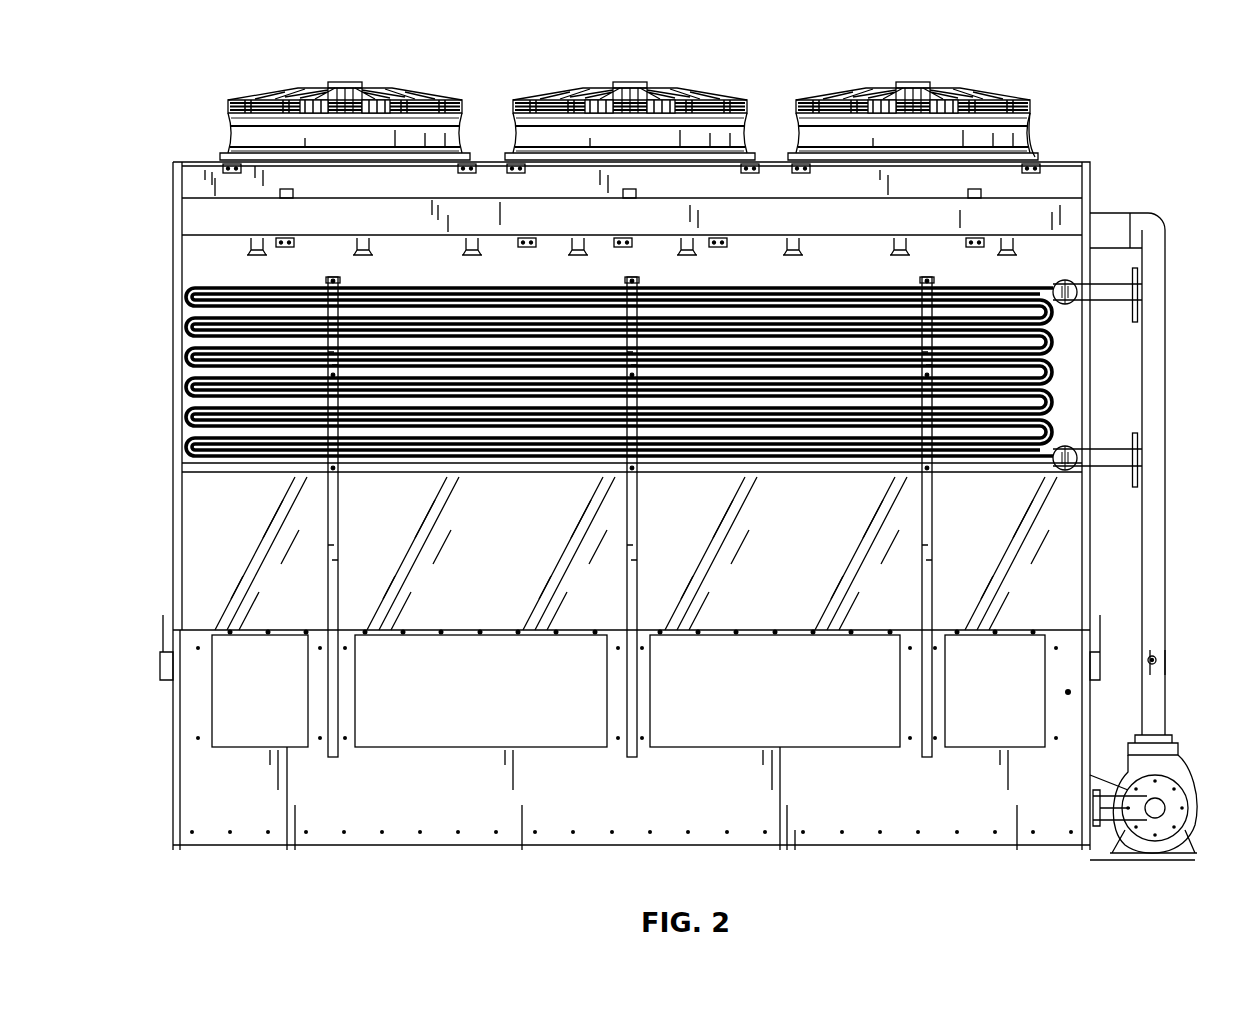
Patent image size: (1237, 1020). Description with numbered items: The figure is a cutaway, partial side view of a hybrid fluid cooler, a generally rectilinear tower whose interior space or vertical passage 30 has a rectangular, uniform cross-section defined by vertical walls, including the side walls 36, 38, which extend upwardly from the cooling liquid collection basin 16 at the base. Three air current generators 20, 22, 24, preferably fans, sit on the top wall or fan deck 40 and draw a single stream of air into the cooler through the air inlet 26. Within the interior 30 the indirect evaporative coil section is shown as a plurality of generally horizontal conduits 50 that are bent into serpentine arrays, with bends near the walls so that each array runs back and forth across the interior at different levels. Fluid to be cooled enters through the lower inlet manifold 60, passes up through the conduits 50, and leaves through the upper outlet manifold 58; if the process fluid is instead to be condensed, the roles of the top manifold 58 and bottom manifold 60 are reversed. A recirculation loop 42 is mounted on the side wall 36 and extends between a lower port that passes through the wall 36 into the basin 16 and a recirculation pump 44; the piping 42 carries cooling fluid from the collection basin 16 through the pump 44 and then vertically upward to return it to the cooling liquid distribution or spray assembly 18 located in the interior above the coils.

The cooling liquid collection basin 16 is at (742, 810).
The cooling liquid distribution assembly 18 is at (1010, 240).
The air current generator 20 is at (915, 82).
The air current generator 22 is at (632, 82).
The air current generator 24 is at (347, 82).
The air inlet 26 is at (1013, 705).
The interior space or vertical passage 30 is at (684, 282).
The side wall 36 is at (1083, 268).
The side wall 38 is at (173, 265).
The top wall or fan deck 40 is at (1033, 158).
The recirculation loop 42 is at (1165, 357).
The recirculation pump 44 is at (1150, 852).
The horizontal conduit 50 is at (262, 462).
The upper outlet manifold 58 is at (1137, 283).
The lower inlet manifold 60 is at (1140, 460).